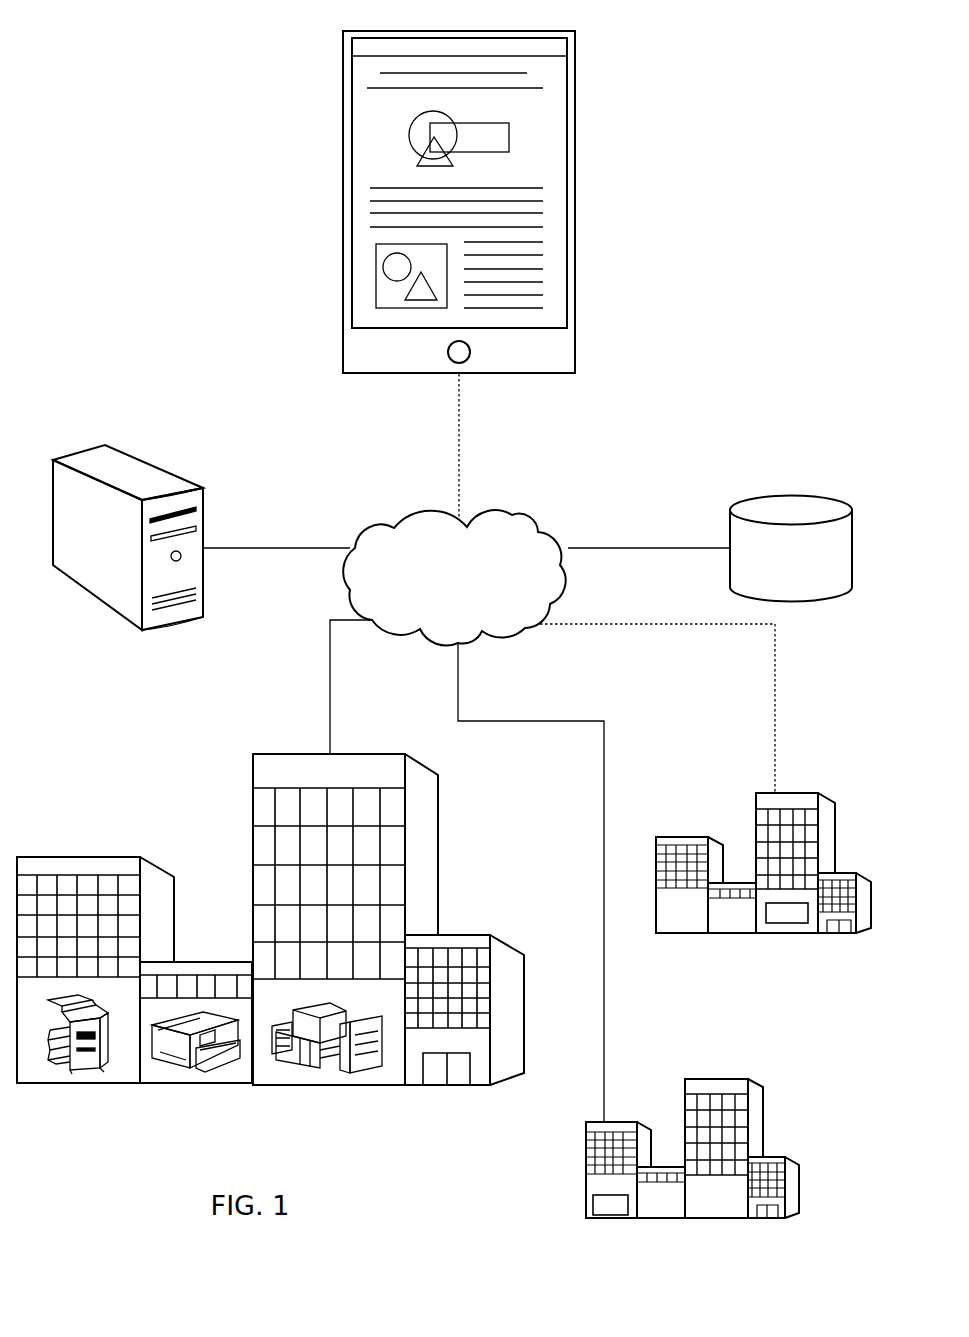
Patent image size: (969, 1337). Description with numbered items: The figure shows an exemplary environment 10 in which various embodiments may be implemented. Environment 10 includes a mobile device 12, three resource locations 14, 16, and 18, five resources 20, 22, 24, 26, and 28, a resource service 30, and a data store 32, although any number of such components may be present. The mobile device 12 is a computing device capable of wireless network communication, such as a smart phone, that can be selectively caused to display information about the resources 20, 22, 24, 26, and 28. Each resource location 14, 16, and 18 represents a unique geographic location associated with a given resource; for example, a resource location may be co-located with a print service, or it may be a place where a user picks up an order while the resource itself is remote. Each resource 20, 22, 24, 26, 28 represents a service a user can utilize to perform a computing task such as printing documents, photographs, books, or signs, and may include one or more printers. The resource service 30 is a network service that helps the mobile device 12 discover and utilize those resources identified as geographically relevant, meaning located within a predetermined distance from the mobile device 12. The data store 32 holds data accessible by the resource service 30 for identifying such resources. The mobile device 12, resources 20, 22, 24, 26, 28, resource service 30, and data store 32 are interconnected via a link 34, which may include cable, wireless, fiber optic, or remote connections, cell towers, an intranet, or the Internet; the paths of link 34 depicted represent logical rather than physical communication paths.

The environment 10 is at (124, 106).
The mobile device 12 is at (400, 374).
The resource location 14 is at (65, 857).
The resource location 16 is at (800, 793).
The resource location 18 is at (723, 1079).
The resource 20 is at (85, 1070).
The resource 22 is at (207, 1070).
The resource 24 is at (352, 1073).
The resource 26 is at (790, 918).
The resource 28 is at (607, 1208).
The resource service 30 is at (148, 468).
The data store 32 is at (822, 507).
The link 34 is at (515, 515).